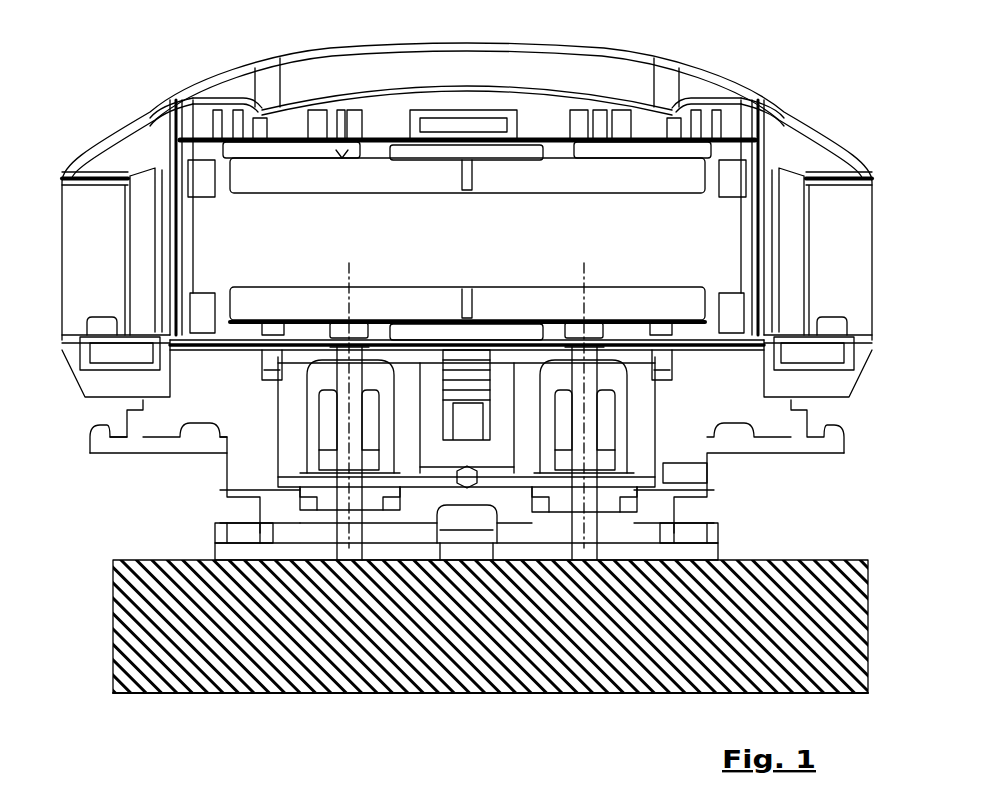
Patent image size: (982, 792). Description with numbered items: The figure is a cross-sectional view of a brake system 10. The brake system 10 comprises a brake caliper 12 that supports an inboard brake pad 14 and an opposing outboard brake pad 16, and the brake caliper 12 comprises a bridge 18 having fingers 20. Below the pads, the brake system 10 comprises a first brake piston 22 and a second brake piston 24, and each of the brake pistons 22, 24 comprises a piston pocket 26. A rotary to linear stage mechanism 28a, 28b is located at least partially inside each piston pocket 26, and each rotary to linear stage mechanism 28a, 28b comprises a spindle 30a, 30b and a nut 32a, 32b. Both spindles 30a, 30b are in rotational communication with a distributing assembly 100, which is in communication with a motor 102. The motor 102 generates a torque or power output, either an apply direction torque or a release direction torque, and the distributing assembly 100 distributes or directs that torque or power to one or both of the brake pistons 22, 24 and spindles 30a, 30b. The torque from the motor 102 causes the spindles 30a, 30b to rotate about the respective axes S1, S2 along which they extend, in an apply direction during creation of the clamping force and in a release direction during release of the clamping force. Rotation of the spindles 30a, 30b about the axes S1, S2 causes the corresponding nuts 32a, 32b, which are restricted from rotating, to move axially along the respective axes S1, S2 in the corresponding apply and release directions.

The brake system 10 is at (132, 70).
The brake caliper 12 is at (782, 107).
The inboard brake pad 14 is at (510, 295).
The outboard brake pad 16 is at (370, 170).
The bridge 18 is at (715, 78).
The fingers 20 is at (341, 150).
The first brake piston 22 is at (266, 440).
The second brake piston 24 is at (617, 425).
The piston pocket 26 is at (317, 453).
The rotary to linear stage mechanism 28a is at (290, 495).
The rotary to linear stage mechanism 28b is at (620, 455).
The spindle 30a is at (217, 540).
The spindle 30b is at (717, 538).
The nut 32a is at (272, 378).
The nut 32b is at (663, 375).
The axis S1 is at (343, 303).
The axis S2 is at (583, 303).
The distributing assembly 100 is at (88, 598).
The motor 102 is at (236, 700).